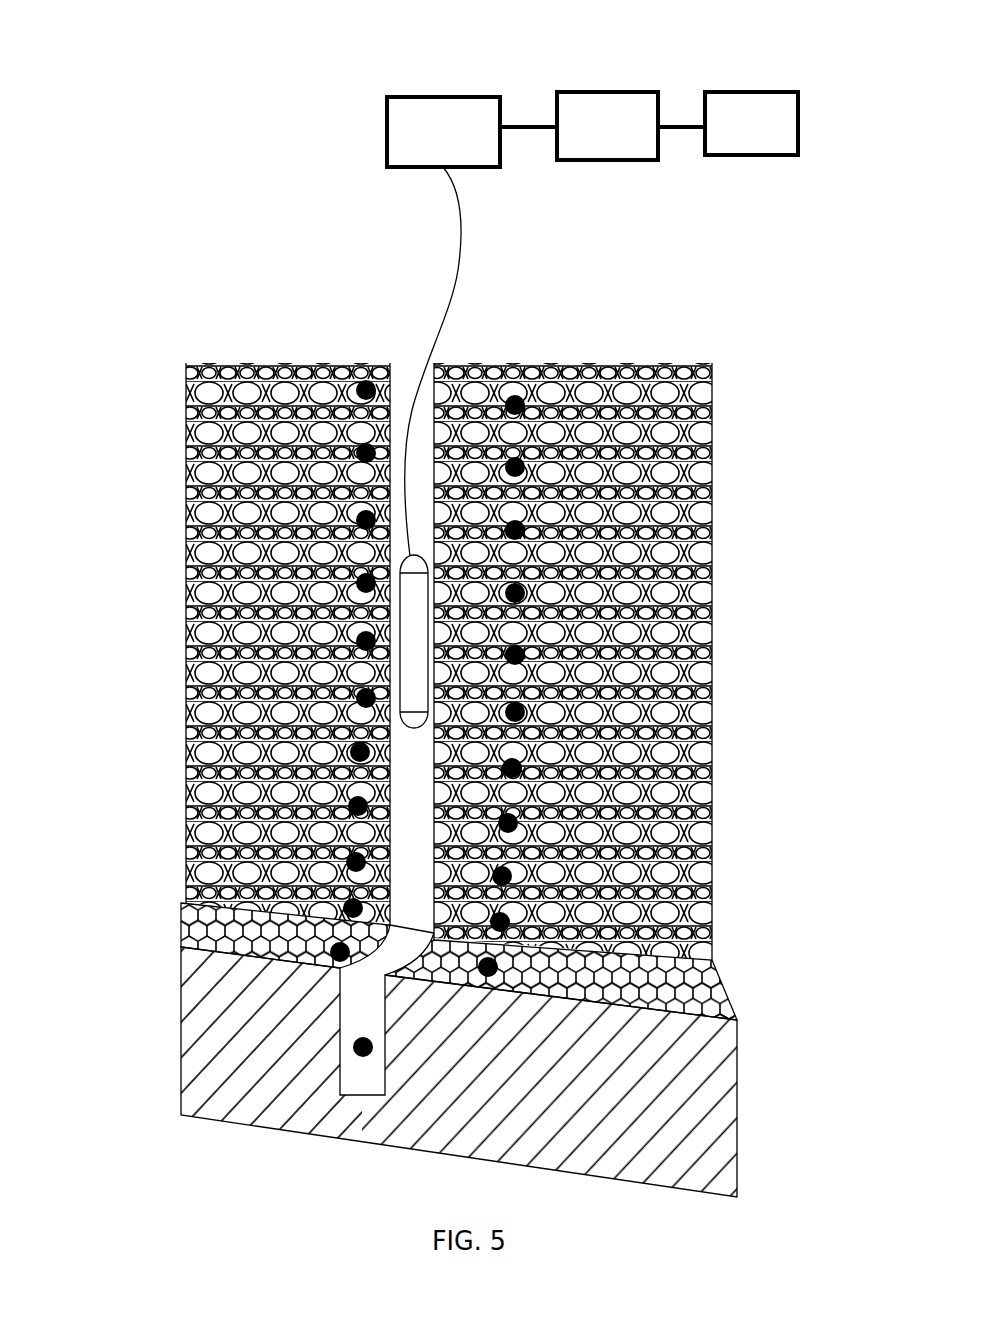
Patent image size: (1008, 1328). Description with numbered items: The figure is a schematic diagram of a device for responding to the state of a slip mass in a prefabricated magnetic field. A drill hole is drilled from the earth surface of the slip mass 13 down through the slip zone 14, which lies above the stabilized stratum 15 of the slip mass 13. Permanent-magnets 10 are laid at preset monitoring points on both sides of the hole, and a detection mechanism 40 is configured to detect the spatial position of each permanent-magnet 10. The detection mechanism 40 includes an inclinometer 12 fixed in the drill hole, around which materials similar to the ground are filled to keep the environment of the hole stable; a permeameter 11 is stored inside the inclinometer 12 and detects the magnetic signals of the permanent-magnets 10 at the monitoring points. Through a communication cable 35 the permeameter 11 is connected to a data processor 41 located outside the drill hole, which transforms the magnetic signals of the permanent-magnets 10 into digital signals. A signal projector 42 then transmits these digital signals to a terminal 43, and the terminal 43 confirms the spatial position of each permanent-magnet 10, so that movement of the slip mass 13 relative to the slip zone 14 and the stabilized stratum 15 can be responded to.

The permanent-magnet 10 is at (368, 388).
The permeameter 11 is at (398, 618).
The inclinometer 12 is at (714, 420).
The slip mass 13 is at (700, 730).
The slip zone 14 is at (712, 968).
The stabilized stratum 15 is at (737, 1073).
The communication cable 35 is at (440, 332).
The detection mechanism 40 is at (115, 131).
The data processor 41 is at (387, 126).
The signal projector 42 is at (598, 92).
The terminal 43 is at (737, 92).